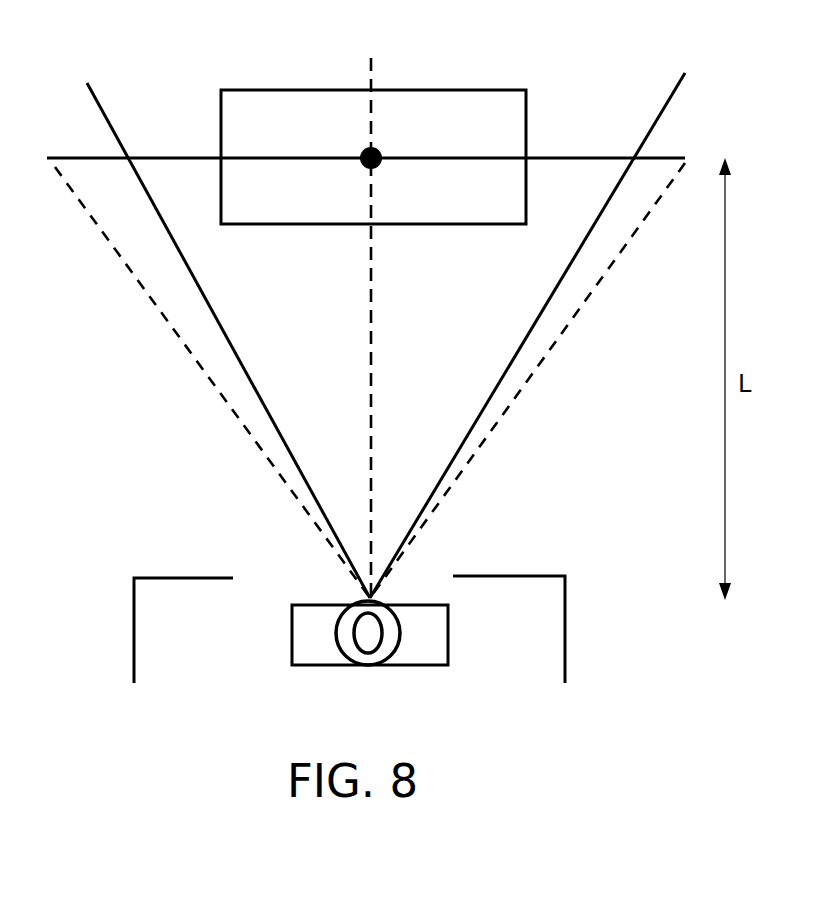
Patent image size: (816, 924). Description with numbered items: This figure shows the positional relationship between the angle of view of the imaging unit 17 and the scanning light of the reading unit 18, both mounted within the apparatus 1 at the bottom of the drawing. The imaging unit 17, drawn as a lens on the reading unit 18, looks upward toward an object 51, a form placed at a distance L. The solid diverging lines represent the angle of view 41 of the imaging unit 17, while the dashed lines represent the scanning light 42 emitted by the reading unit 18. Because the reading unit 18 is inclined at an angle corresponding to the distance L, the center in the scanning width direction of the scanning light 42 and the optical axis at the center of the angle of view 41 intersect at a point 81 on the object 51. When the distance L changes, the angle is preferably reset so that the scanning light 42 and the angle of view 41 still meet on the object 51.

The image reading apparatus / camera housing 1 is at (568, 620).
The imaging unit 17 is at (383, 600).
The reading unit 18 is at (448, 627).
The angle of view 41 is at (658, 125).
The scanning light 42 is at (562, 155).
The object 51 is at (440, 87).
The point 81 is at (377, 152).